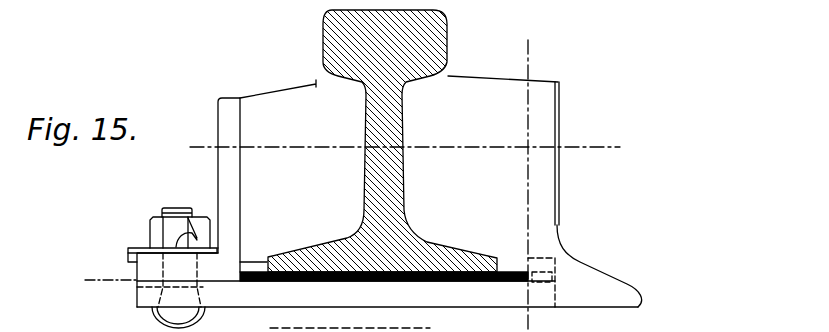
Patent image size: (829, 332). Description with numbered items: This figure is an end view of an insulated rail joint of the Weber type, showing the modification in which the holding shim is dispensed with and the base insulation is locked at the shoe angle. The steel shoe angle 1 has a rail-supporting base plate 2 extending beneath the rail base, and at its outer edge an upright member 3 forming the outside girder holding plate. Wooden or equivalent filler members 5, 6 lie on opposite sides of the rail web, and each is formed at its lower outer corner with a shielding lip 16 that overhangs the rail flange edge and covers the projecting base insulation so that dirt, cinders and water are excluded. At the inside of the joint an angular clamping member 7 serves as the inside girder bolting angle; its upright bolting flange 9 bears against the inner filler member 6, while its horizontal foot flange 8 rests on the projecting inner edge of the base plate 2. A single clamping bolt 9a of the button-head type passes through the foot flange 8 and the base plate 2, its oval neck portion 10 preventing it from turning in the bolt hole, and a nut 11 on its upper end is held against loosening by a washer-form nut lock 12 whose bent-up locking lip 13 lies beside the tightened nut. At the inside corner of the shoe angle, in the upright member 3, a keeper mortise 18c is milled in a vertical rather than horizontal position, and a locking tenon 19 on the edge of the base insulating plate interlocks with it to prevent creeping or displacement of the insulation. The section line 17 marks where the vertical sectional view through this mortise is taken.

The shoe angle 1 is at (610, 194).
The rail-supporting base plate 2 is at (387, 304).
The upright member 3 is at (553, 147).
The filler member 5 is at (484, 78).
The filler member 6 is at (315, 83).
The angular clamping member 7 is at (224, 259).
The horizontal foot flange 8 is at (143, 266).
The upright bolting flange 9 is at (228, 112).
The clamping bolt 9a is at (172, 207).
The oval neck portion 10 is at (137, 287).
The nut 11 is at (158, 217).
The nut lock 12 is at (143, 247).
The bent-up locking lip 13 is at (190, 214).
The shielding lips 16 is at (617, 250).
The section line 17 is at (552, 54).
The keeper mortise 18c is at (555, 298).
The locking tenon 19 is at (572, 257).